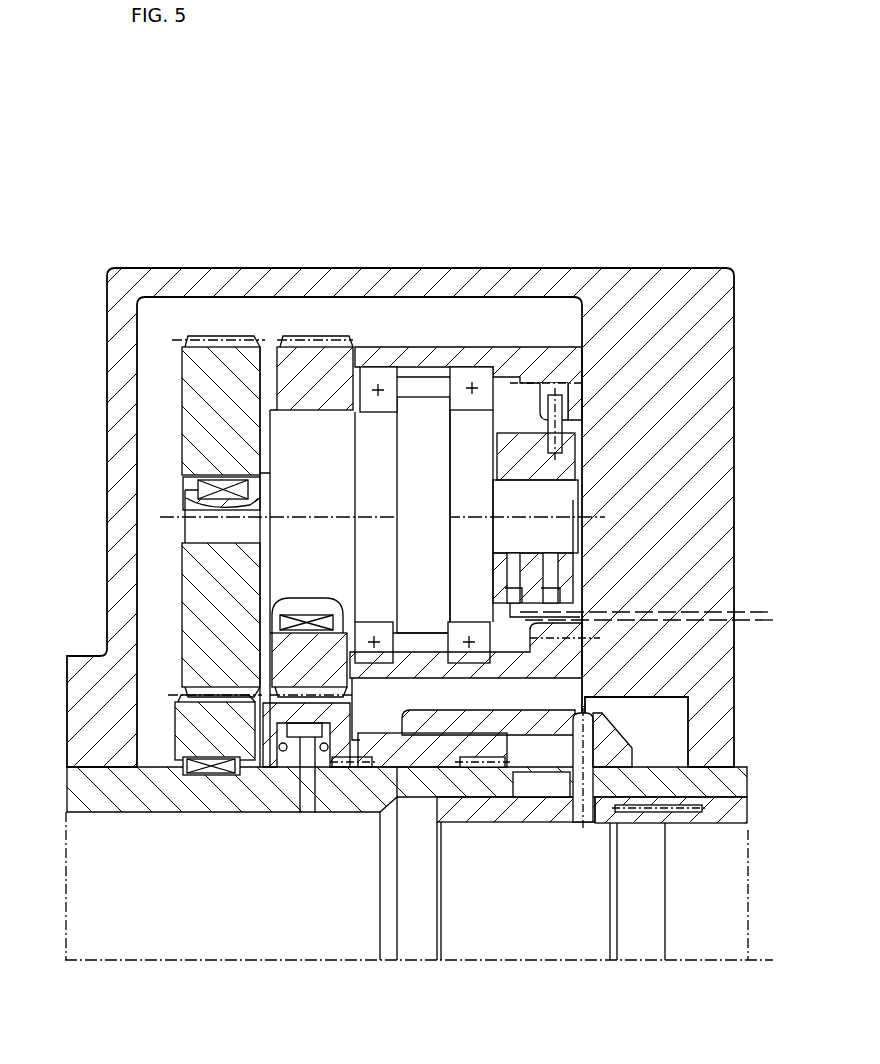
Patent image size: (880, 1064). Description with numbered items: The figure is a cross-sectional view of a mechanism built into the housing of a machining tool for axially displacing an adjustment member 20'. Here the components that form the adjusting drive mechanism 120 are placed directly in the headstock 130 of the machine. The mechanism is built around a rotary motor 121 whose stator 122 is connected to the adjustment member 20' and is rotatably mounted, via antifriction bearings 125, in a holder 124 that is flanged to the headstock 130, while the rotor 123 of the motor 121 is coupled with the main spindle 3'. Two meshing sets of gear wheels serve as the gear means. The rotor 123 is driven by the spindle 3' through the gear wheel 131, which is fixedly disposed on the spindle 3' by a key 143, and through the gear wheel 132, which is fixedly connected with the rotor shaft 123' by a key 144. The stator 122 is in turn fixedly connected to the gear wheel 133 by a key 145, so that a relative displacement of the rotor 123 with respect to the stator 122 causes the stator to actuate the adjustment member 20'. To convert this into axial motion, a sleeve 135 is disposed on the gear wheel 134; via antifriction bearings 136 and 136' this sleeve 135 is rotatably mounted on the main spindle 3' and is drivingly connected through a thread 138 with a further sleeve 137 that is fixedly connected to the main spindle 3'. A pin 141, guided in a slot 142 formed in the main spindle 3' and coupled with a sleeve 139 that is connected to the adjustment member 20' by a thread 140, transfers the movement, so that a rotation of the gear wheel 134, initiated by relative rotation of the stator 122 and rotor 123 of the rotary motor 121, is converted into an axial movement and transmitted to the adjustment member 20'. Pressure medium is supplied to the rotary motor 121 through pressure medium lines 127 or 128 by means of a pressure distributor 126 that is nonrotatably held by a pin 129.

The main spindle 3' is at (428, 775).
The adjustment member 20' is at (679, 922).
The adjusting drive mechanism 120 is at (392, 208).
The rotary motor 121 is at (420, 395).
The stator 122 is at (478, 430).
The rotor 123 is at (261, 471).
The rotor shaft 123' is at (116, 516).
The holder 124 is at (463, 370).
The antifriction bearings 125 is at (373, 385).
The pressure distributor 126 is at (565, 470).
The pressure medium line 127 is at (740, 612).
The pressure medium line 128 is at (740, 620).
The pin 129 is at (552, 392).
The headstock 130 is at (592, 262).
The gear wheel 131 is at (176, 745).
The gear wheel 132 is at (180, 357).
The gear wheel 133 is at (307, 365).
The gear wheel 134 is at (290, 745).
The sleeve 135 is at (395, 745).
The antifriction bearing 136 is at (330, 886).
The antifriction bearing 136' is at (482, 883).
The further sleeve 137 is at (483, 722).
The thread 138 is at (430, 762).
The sleeve 139 is at (525, 810).
The thread 140 is at (662, 827).
The pin 141 is at (590, 745).
The slot 142 is at (552, 787).
The key 143 is at (207, 773).
The key 144 is at (195, 477).
The key 145 is at (296, 612).